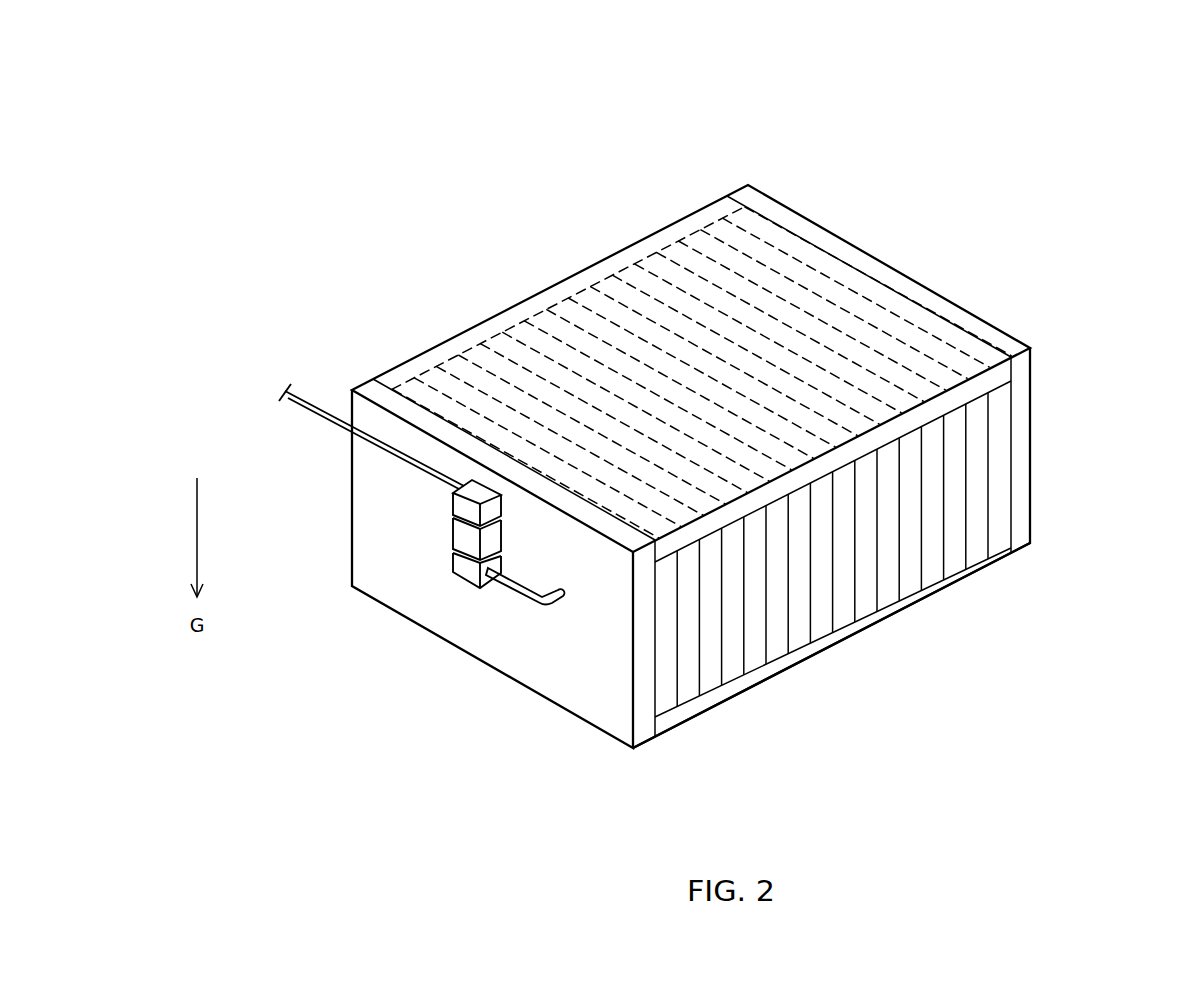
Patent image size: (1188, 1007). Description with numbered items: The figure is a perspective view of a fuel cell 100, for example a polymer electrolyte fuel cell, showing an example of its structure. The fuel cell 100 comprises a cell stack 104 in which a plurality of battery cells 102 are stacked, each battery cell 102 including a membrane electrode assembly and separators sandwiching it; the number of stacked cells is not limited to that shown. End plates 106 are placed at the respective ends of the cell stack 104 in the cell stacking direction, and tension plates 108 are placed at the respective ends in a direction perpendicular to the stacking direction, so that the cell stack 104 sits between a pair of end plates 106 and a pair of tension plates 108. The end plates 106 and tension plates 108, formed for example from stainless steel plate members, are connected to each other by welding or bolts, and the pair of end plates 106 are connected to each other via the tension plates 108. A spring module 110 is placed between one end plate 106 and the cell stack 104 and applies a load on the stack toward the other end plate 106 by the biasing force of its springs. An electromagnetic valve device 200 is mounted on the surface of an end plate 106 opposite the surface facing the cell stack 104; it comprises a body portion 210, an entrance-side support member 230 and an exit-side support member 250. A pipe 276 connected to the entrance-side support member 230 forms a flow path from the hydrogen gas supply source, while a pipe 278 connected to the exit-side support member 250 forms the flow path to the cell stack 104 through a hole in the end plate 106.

The fuel cell 100 is at (853, 208).
The battery cell 102 is at (768, 650).
The cell stack 104 is at (833, 645).
The end plate 106 is at (1022, 470).
The tension plate 108 is at (975, 382).
The spring module 110 is at (978, 528).
The electromagnetic valve device 200 is at (488, 598).
The body portion 210 is at (464, 537).
The entrance-side support member 230 is at (466, 505).
The exit-side support member 250 is at (464, 572).
The pipe 276 is at (326, 423).
The pipe 278 is at (537, 601).